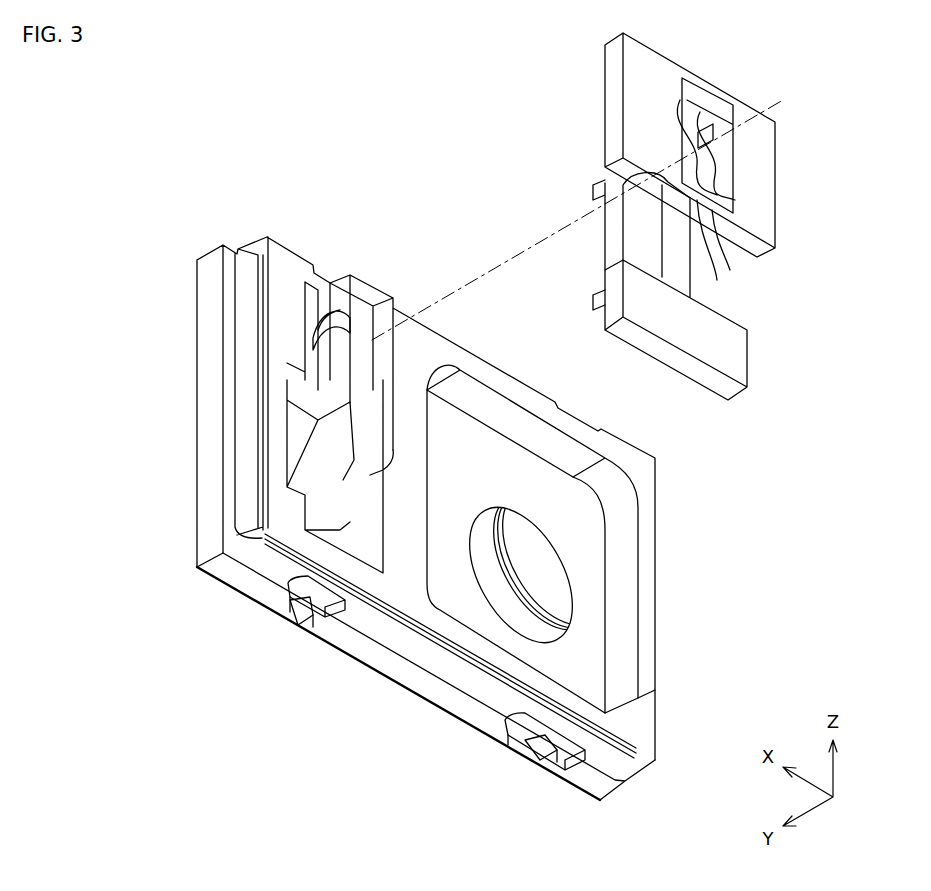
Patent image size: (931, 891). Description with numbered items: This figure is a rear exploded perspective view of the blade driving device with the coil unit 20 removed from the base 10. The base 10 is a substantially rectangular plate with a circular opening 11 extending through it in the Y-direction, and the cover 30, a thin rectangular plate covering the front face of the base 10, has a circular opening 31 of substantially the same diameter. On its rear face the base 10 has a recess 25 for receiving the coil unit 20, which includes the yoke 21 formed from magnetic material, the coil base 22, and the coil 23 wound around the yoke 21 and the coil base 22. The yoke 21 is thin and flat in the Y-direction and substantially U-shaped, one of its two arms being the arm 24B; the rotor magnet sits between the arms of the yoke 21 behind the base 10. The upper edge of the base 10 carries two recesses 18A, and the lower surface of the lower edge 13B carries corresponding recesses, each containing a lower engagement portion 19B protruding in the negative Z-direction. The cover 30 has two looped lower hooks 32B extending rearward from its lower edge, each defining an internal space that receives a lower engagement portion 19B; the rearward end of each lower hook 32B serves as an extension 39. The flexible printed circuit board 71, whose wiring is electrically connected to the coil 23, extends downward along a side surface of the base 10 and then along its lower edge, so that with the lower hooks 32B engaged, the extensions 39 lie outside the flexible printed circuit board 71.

The base 10 is at (650, 490).
The circular opening 11 is at (622, 566).
The circular opening 31 is at (522, 597).
The lower edge 13B is at (417, 686).
The recesses 18A is at (333, 278).
The lower engagement portion 19B is at (293, 608).
The coil unit 20 is at (702, 254).
The yoke 21 is at (753, 283).
The coil base 22 is at (760, 157).
The coil 23 is at (613, 238).
The arm 24B is at (703, 130).
The recess 25 is at (368, 456).
The cover 30 is at (197, 465).
The lower hooks 32B is at (297, 648).
The extension 39 is at (317, 598).
The flexible printed circuit board 71 is at (443, 660).